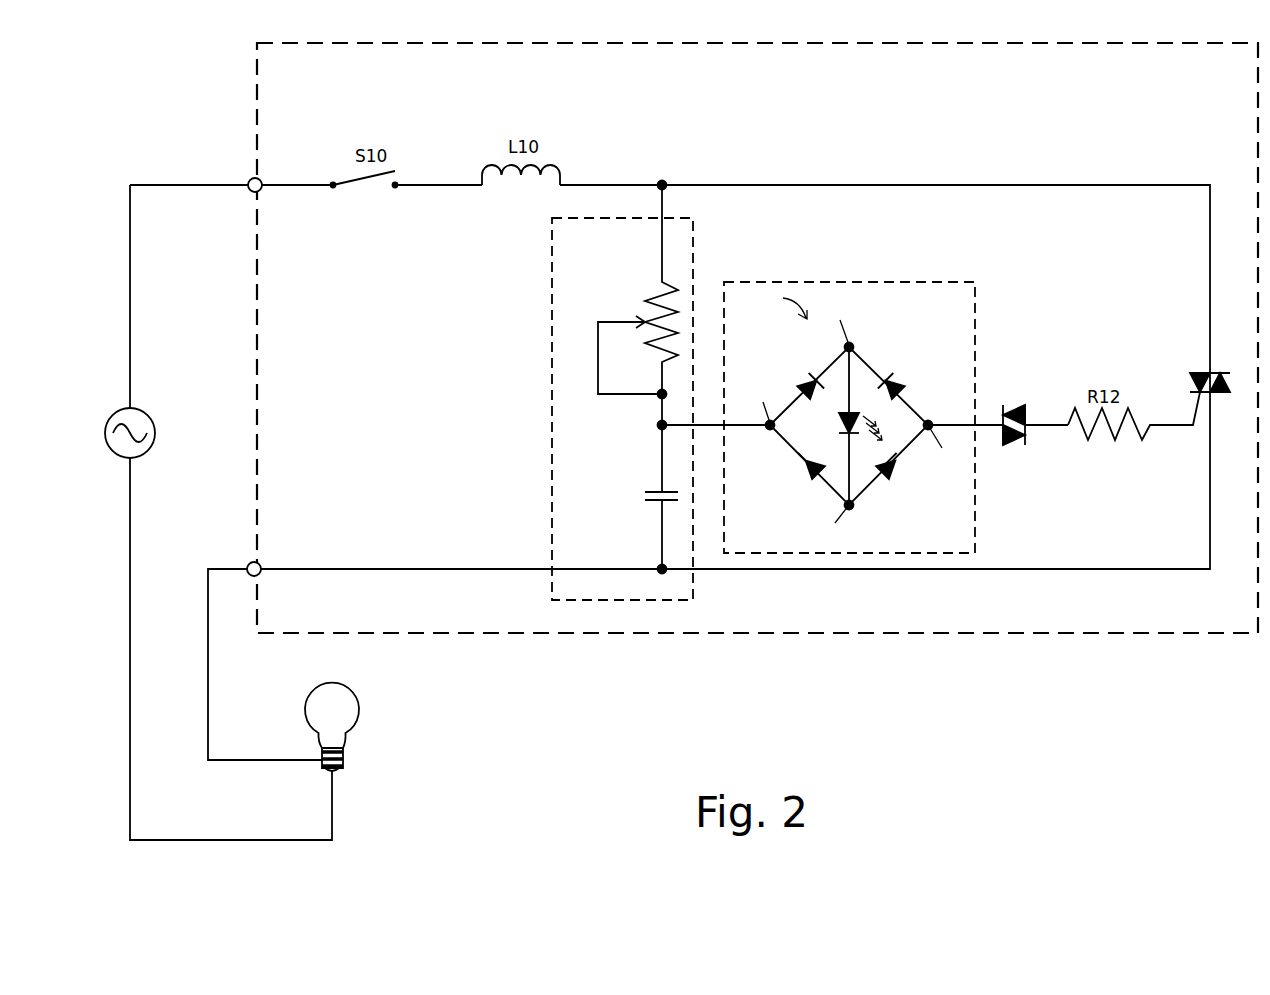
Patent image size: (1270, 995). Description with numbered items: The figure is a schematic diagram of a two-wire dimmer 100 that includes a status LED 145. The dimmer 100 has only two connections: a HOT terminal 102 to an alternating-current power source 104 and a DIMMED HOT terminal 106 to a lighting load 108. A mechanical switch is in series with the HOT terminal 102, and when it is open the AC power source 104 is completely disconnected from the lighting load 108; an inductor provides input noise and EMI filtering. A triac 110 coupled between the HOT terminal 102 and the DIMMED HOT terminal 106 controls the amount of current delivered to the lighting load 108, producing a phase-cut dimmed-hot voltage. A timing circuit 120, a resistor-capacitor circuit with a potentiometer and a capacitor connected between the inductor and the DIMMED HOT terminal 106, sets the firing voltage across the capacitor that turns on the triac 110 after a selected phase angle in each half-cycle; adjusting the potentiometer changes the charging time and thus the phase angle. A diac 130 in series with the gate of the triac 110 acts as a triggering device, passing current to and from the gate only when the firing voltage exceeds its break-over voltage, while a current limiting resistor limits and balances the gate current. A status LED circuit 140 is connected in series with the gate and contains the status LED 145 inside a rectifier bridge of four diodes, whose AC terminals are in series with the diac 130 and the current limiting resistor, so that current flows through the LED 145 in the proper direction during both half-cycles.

The two-wire dimmer 100 is at (957, 43).
The HOT terminal 102 is at (248, 190).
The AC power source 104 is at (143, 422).
The DIMMED HOT terminal 106 is at (247, 567).
The lighting load 108 is at (358, 712).
The triac 110 is at (1198, 383).
The timing circuit 120 is at (552, 378).
The diac 130 is at (1012, 412).
The status LED circuit 140 is at (849, 395).
The status LED 145 is at (857, 414).